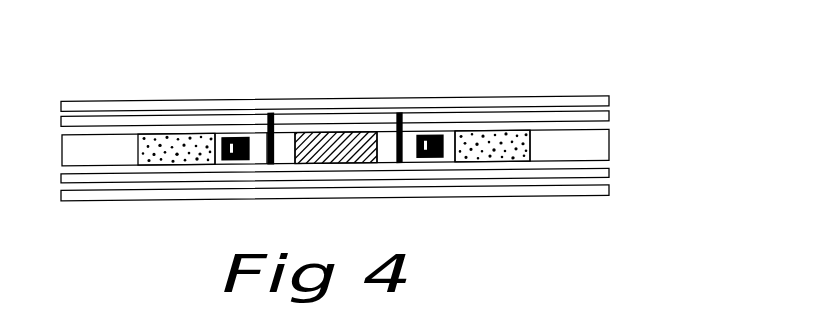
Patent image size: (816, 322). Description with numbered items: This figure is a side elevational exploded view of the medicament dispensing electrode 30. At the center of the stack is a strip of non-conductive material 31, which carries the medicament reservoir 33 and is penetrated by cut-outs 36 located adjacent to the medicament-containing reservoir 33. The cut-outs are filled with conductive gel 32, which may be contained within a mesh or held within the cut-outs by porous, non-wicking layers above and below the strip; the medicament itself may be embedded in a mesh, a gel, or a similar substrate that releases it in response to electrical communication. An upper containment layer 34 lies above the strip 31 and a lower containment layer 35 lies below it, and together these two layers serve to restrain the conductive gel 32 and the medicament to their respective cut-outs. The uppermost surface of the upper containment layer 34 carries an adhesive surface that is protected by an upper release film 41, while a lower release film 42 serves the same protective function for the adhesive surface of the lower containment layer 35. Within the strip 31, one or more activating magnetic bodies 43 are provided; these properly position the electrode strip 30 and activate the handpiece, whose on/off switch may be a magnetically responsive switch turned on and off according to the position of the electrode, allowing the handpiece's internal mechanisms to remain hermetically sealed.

The electrode 30 is at (508, 70).
The strip of non-conductive material 31 is at (609, 146).
The conductive gel 32 is at (165, 150).
The medicament reservoir 33 is at (318, 140).
The upper containment layer 34 is at (609, 115).
The lower containment layer 35 is at (609, 173).
The cut-outs 36 is at (270, 118).
The upper release film 41 is at (609, 96).
The lower release film 42 is at (609, 191).
The activating magnetic bodies 43 is at (234, 148).